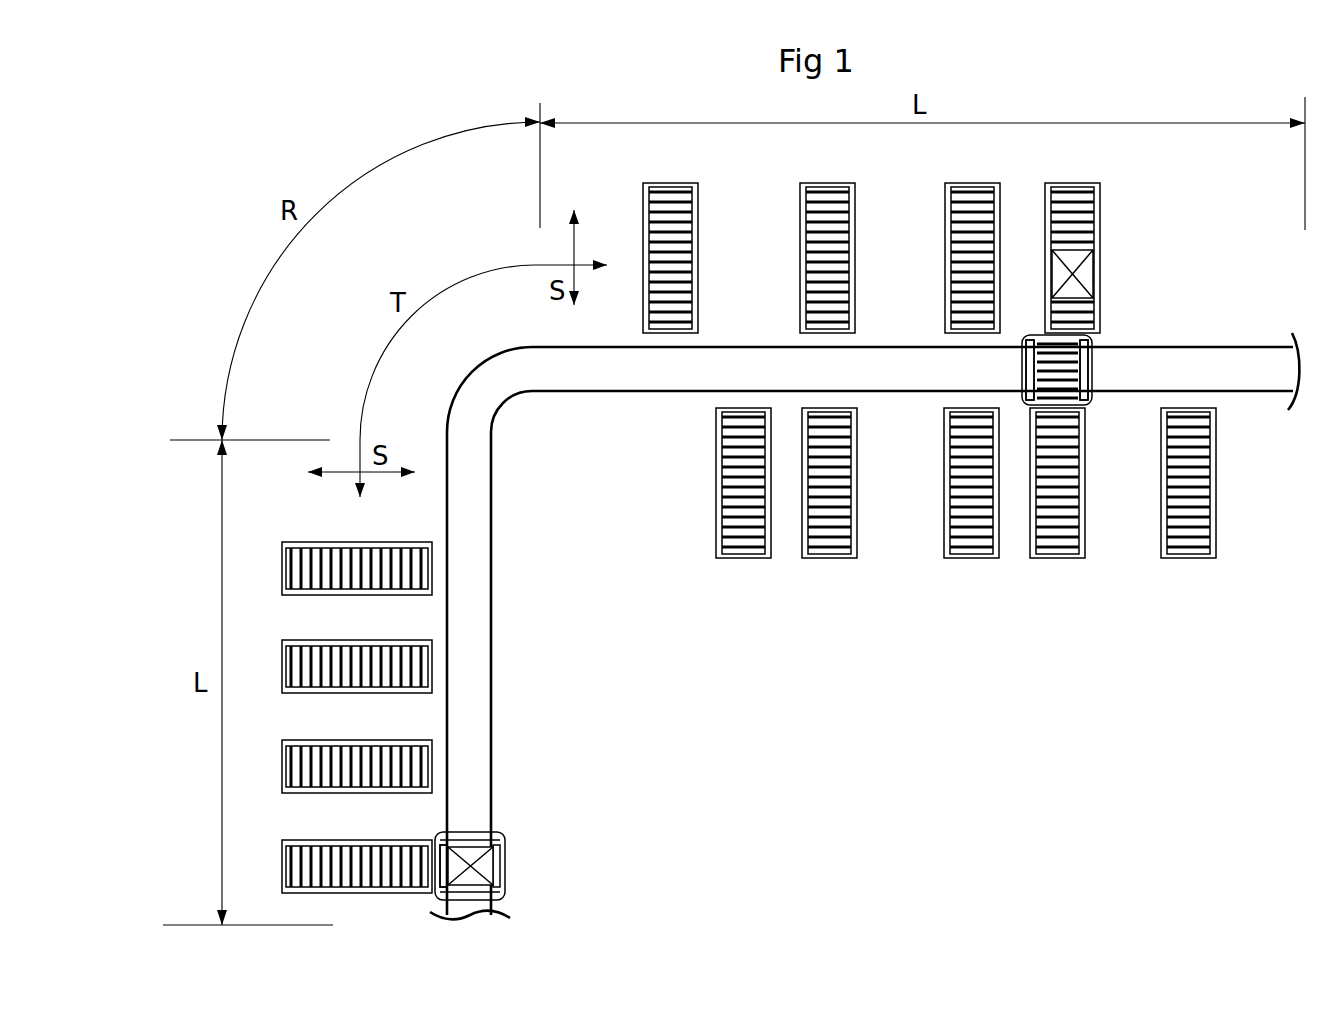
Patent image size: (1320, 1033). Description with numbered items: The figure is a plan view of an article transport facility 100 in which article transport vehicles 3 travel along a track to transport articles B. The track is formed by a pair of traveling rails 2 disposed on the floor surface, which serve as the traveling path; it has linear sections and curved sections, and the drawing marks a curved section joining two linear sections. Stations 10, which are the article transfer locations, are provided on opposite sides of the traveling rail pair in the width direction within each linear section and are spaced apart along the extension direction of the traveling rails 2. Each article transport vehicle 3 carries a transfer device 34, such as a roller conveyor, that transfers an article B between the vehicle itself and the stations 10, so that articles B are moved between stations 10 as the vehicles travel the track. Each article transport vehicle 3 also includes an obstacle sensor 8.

The traveling rails 2 is at (598, 348).
The article transport vehicle 3 is at (1028, 327).
The obstacle sensor 8 is at (1092, 372).
The stations 10 is at (698, 263).
The transfer device 34 is at (1082, 388).
The article B is at (1080, 272).
The article transport facility 100 is at (1101, 743).